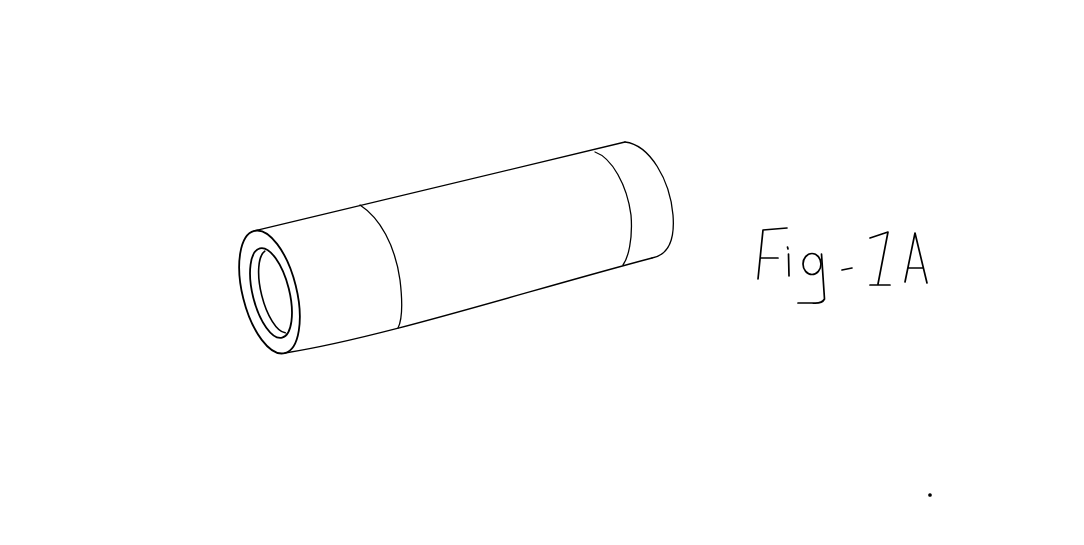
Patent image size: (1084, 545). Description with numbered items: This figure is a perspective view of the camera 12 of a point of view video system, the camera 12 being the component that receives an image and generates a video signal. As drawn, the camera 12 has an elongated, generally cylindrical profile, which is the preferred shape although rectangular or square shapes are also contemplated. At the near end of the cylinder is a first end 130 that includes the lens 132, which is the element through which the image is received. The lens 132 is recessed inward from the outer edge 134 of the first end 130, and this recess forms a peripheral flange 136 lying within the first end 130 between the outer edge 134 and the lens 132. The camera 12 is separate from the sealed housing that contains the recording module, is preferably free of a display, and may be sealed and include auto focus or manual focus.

The camera 12 is at (460, 82).
The first end 130 is at (245, 372).
The lens 132 is at (275, 285).
The outer edge 134 is at (660, 125).
The peripheral flange 136 is at (255, 243).